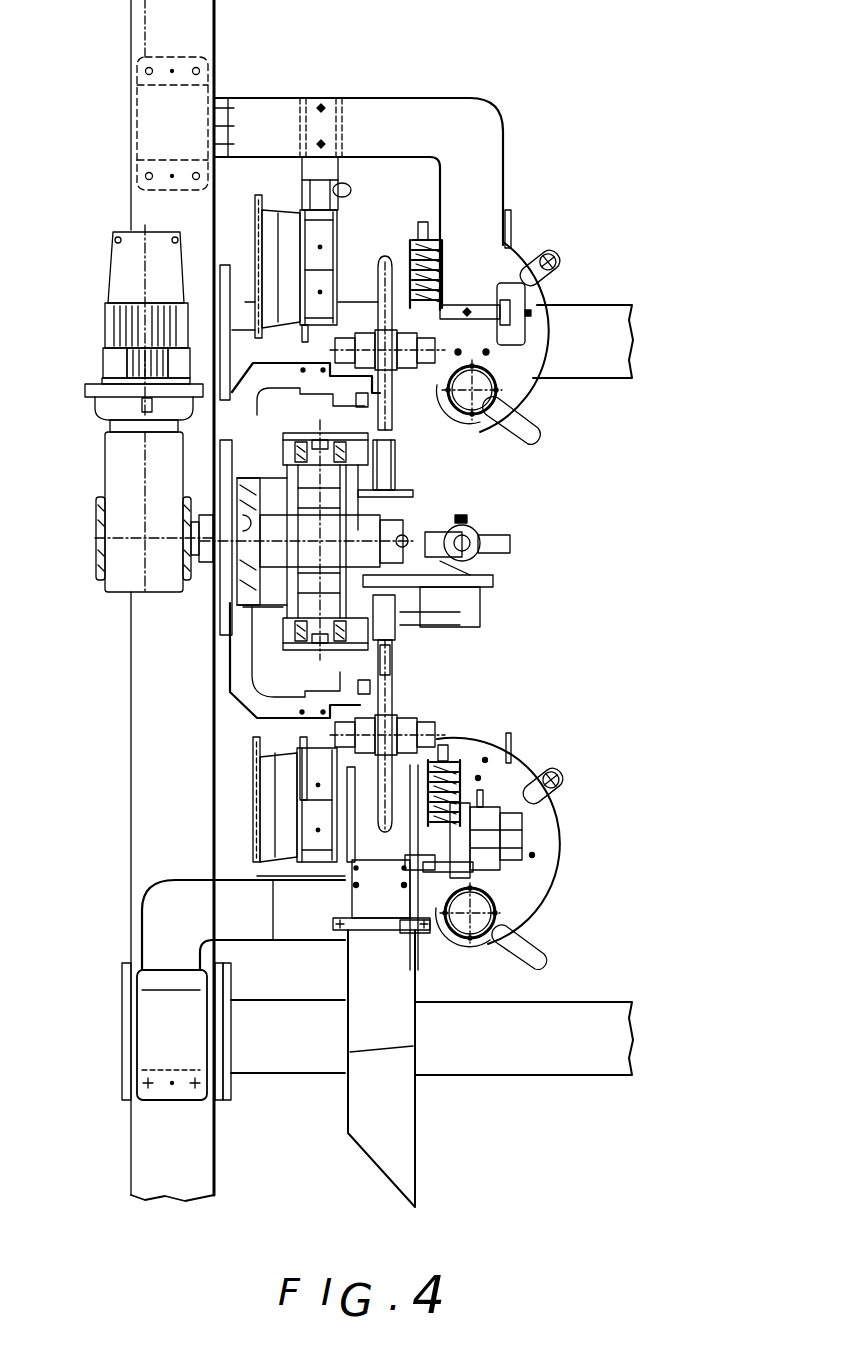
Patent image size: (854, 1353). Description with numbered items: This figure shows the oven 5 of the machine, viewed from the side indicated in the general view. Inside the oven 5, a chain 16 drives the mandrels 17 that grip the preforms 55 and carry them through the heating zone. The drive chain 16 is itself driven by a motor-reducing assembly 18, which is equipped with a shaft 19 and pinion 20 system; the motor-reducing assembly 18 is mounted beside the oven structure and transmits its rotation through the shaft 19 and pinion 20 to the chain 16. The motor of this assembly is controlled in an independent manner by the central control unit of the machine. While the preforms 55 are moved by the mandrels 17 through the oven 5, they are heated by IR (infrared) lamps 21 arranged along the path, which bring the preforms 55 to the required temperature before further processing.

The oven 5 is at (527, 553).
The chain 16 is at (297, 642).
The mandrels 17 is at (395, 388).
The motor-reducing assembly 18 is at (115, 405).
The shaft 19 is at (240, 556).
The pinion 20 is at (298, 490).
The IR lamps 21 is at (438, 227).
The preforms 55 is at (384, 262).